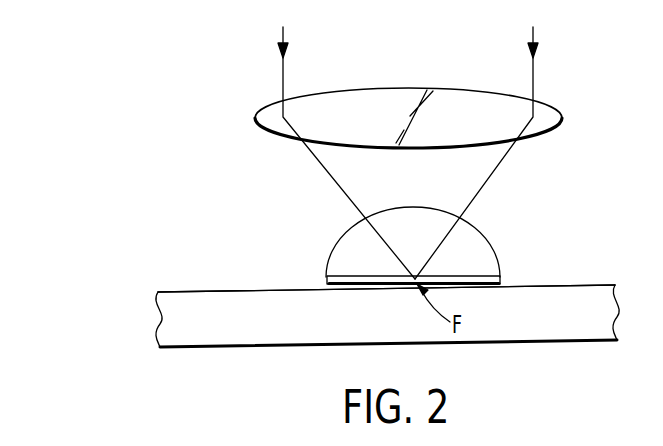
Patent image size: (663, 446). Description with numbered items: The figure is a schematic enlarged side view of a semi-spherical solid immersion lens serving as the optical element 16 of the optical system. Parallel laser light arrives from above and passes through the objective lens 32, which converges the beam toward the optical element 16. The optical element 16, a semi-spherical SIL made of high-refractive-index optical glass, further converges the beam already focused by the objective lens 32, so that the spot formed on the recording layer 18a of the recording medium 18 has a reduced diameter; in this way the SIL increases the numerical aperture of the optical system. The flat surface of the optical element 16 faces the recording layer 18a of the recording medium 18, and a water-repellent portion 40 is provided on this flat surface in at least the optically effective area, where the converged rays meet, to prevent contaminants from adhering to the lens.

The objective lens 32 is at (268, 113).
The optical element 16 is at (342, 243).
The water-repellent portion 40 is at (470, 274).
The recording medium 18 is at (338, 286).
The recording layer 18a is at (386, 262).